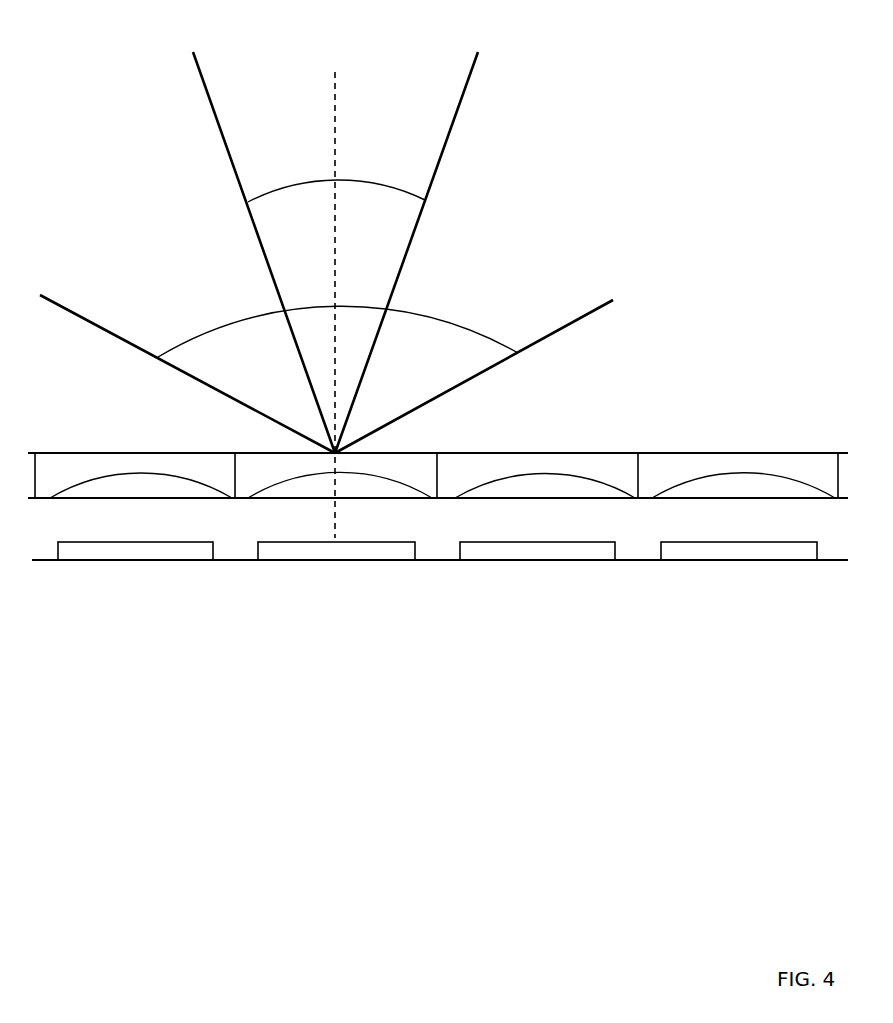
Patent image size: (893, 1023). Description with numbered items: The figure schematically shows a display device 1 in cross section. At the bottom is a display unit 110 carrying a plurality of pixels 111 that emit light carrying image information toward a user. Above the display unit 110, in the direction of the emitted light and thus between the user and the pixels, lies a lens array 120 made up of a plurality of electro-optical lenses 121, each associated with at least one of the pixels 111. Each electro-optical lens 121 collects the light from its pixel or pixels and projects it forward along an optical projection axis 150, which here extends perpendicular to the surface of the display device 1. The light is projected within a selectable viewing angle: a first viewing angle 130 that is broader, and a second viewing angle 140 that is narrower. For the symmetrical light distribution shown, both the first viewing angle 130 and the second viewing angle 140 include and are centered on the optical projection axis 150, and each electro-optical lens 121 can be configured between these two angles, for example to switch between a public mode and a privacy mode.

The display device 1 is at (714, 110).
The display unit 110 is at (833, 592).
The pixels 111 is at (125, 563).
The lens array 120 is at (824, 411).
The electro-optical lenses 121 is at (265, 453).
The first viewing angle 130 is at (296, 198).
The second viewing angle 140 is at (491, 346).
The optical projection axis 150 is at (340, 80).